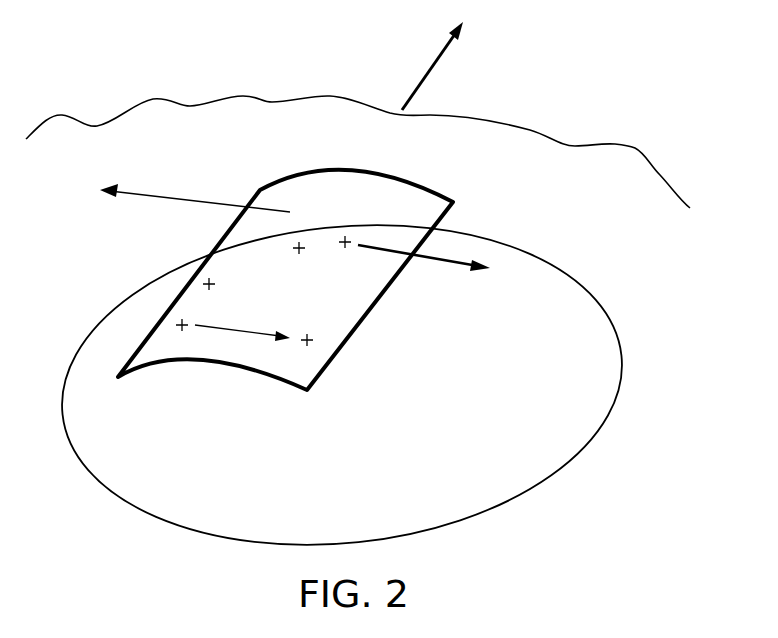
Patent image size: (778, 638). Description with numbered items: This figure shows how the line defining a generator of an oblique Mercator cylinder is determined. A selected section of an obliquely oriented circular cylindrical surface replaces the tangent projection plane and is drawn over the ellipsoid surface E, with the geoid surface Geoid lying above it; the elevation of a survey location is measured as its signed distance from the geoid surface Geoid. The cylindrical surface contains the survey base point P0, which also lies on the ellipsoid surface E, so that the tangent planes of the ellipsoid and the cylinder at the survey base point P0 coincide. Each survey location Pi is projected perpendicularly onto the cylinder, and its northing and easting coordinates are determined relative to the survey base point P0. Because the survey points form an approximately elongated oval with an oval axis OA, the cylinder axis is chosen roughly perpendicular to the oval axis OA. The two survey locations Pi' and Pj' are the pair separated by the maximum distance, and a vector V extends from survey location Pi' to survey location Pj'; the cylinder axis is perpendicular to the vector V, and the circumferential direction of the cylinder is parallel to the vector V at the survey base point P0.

The ellipsoid surface E is at (620, 326).
The geoid surface Geoid is at (533, 131).
The oval axis OA is at (194, 204).
The survey location Pi is at (221, 285).
The survey base point P0 is at (352, 253).
The survey location Pi' is at (172, 338).
The survey location Pj' is at (296, 350).
The vector V is at (195, 325).